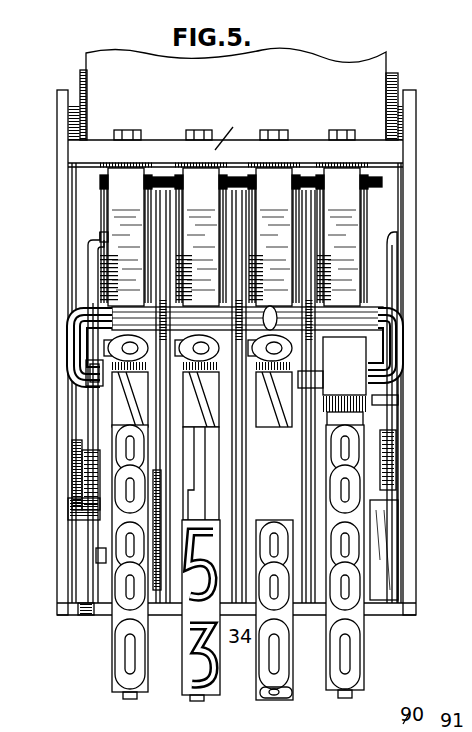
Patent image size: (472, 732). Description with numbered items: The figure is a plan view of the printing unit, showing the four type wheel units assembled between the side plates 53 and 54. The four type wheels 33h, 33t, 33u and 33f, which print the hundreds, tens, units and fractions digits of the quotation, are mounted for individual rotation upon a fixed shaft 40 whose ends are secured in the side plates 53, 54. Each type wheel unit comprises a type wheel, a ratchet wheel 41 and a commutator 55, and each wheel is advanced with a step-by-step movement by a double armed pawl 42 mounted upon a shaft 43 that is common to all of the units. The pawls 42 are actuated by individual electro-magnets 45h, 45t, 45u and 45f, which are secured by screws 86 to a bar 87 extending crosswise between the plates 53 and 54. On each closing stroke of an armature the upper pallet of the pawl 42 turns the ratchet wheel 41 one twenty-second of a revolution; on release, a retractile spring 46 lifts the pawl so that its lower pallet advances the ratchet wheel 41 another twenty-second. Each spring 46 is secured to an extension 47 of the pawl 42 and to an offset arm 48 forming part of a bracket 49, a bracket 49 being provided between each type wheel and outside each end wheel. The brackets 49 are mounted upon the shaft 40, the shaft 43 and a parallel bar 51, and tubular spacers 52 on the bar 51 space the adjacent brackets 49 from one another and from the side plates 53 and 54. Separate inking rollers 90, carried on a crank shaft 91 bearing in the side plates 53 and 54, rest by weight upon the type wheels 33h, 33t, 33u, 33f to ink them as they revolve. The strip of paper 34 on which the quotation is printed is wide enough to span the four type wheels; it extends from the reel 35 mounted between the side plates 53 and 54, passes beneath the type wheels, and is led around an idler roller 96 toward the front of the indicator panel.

The type wheel 33h is at (120, 700).
The type wheel 33t is at (198, 702).
The type wheel 33u is at (262, 700).
The type wheel 33f is at (345, 700).
The strip of paper 34 is at (351, 72).
The reel 35 is at (398, 78).
The fixed shaft 40 is at (78, 518).
The ratchet wheel 41 is at (103, 565).
The double armed pawl 42 is at (100, 470).
The shaft 43 is at (134, 315).
The electro-magnet 45h is at (103, 192).
The electro-magnet 45t is at (178, 192).
The electro-magnet 45u is at (250, 192).
The electro-magnet 45f is at (318, 192).
The retractile spring 46 is at (116, 275).
The extension 47 is at (88, 366).
The offset arm 48 is at (103, 240).
The bracket 49 is at (92, 292).
The bar 51 is at (272, 307).
The tubular spacer 52 is at (341, 315).
The side plate 53 is at (62, 207).
The side plate 54 is at (410, 196).
The commutator 55 is at (161, 600).
The screws 86 is at (191, 130).
The bar 87 is at (237, 126).
The inking roller 90 is at (332, 428).
The crank shaft 91 is at (78, 347).
The idler roller 96 is at (86, 615).